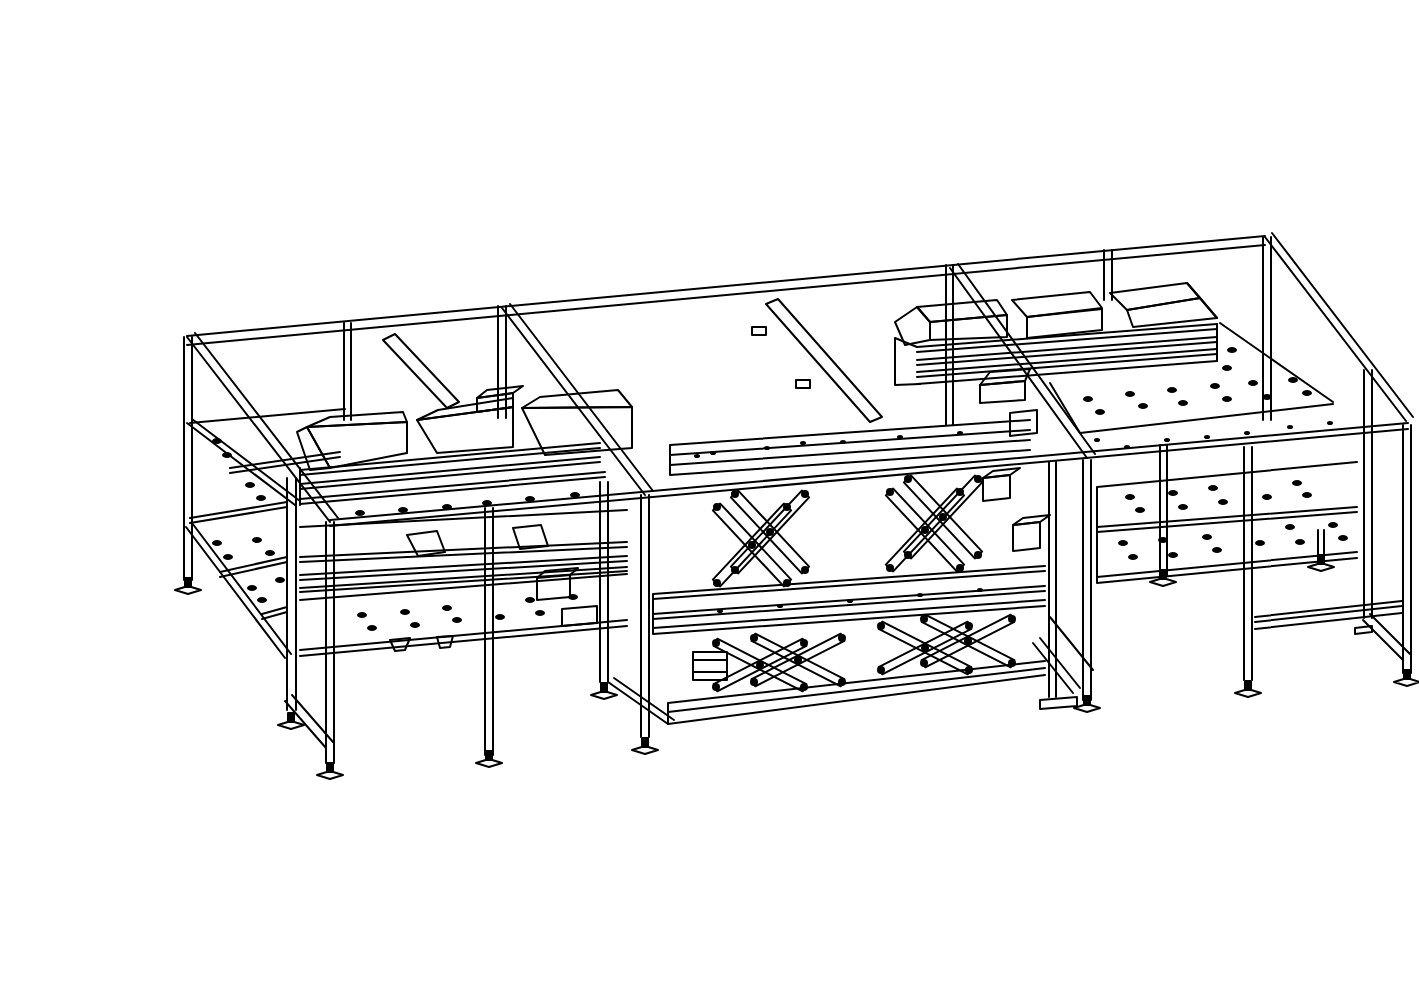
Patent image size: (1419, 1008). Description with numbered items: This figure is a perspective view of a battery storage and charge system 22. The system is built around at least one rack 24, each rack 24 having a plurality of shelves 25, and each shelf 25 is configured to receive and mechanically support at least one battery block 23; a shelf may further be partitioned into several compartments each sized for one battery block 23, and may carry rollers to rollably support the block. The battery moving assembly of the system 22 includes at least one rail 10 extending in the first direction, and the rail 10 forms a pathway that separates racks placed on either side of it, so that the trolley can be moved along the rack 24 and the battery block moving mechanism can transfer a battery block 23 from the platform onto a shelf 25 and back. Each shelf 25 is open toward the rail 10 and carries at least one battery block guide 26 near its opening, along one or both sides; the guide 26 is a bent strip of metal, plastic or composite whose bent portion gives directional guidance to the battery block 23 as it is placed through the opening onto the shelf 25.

The rail 10 is at (776, 303).
The battery storage and charge system 22 is at (1321, 178).
The battery block 23 is at (335, 425).
The rack 24 is at (218, 380).
The shelf 25 is at (1282, 387).
The battery block guide 26 is at (500, 398).